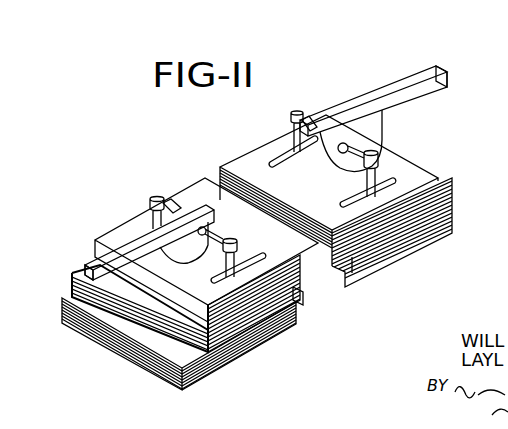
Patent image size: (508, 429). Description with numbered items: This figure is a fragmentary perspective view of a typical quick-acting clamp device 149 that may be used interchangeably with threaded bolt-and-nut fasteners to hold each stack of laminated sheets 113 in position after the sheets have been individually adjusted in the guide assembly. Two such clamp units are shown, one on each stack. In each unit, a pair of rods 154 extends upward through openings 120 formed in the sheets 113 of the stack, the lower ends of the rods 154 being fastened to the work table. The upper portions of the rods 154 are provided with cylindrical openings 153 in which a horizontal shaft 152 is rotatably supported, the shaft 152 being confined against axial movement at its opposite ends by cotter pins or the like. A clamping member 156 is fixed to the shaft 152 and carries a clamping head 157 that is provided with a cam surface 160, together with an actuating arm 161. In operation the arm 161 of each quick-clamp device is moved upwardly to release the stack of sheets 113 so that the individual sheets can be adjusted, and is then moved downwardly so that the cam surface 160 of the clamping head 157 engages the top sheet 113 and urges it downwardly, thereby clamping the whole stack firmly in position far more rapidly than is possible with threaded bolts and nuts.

The sheets 113 is at (452, 212).
The openings 120 is at (283, 135).
The clamp assembly 149 is at (334, 56).
The horizontal shaft 152 is at (165, 210).
The cylindrical openings 153 is at (150, 203).
The rods 154 is at (150, 216).
The clamping member 156 is at (89, 260).
The clamping head 157 is at (193, 237).
The cam surface 160 is at (188, 263).
The actuating arm 161 is at (420, 78).